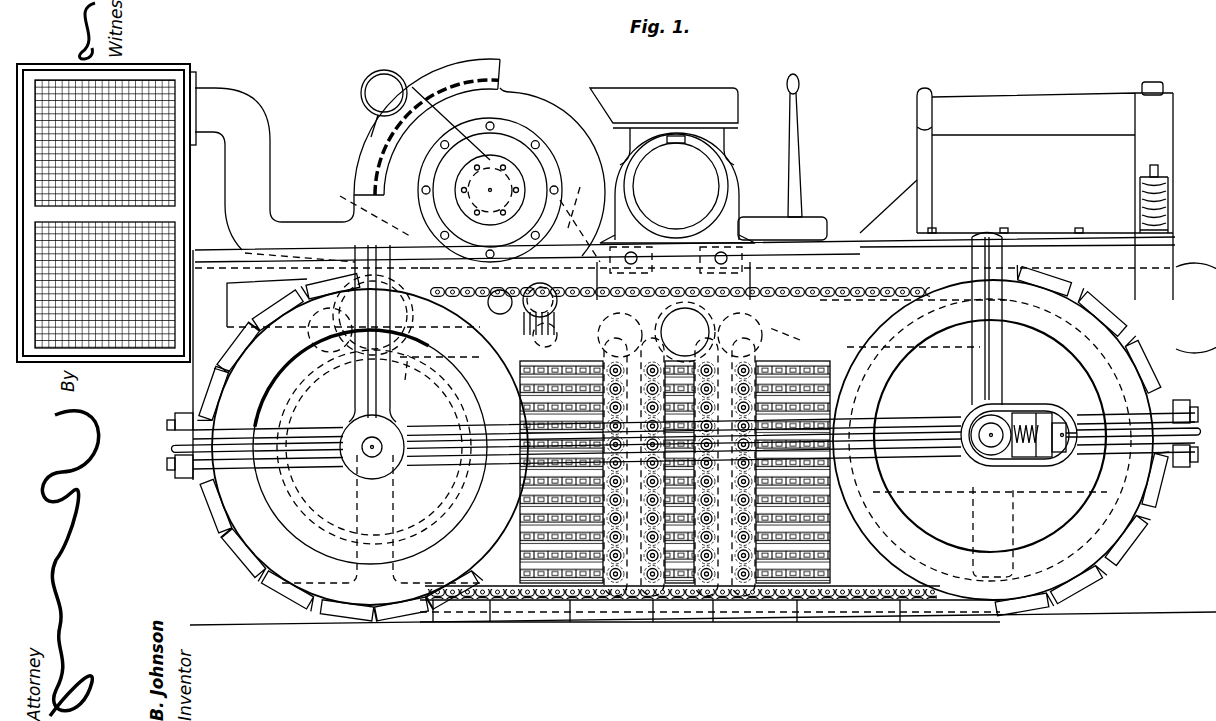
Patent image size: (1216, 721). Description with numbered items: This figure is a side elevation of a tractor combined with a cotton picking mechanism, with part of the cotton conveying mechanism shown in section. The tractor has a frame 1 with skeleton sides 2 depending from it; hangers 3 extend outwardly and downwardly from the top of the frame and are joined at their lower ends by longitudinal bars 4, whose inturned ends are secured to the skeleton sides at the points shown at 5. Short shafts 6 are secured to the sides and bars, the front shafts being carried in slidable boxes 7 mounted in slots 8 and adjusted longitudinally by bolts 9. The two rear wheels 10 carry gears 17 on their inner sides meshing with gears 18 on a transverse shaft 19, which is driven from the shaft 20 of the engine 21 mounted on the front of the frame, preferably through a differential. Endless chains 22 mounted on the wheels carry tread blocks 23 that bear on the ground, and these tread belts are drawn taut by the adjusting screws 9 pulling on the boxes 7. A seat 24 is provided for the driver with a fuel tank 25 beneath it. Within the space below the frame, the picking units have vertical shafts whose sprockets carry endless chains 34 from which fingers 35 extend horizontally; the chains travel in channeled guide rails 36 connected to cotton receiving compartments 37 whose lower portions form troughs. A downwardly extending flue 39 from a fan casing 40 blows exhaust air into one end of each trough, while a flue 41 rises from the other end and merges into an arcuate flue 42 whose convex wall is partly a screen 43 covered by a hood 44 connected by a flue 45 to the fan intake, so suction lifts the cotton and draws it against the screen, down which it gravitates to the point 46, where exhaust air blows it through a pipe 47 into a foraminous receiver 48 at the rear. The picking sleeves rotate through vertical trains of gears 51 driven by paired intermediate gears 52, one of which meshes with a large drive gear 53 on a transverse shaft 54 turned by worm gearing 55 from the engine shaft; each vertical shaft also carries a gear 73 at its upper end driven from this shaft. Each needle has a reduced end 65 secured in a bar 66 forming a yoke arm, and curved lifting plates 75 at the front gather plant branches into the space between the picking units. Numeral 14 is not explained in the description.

The frame 1 is at (814, 242).
The skeleton sides 2 is at (858, 332).
The hangers 3 is at (980, 347).
The longitudinal bars 4 is at (683, 470).
The securing point of bar ends 5 is at (1185, 404).
The short shafts 6 is at (985, 438).
The slidable boxes 7 is at (1005, 445).
The slots 8 is at (1028, 420).
The bolts 9 is at (1031, 446).
The rear wheels 10 is at (968, 527).
The pinion 14 is at (530, 315).
The gears 17 is at (409, 376).
The gears 18 is at (400, 315).
The transverse shaft 19 is at (325, 340).
The engine shaft 20 is at (517, 353).
The engine 21 is at (1022, 105).
The endless chains 22 is at (552, 602).
The tread blocks 23 is at (645, 602).
The seat 24 is at (681, 100).
The fuel tank 25 is at (698, 188).
The endless chains 34 is at (788, 558).
The fingers 35 is at (867, 563).
The channeled guide rails 36 is at (702, 553).
The cotton receiving compartments 37 is at (754, 563).
The flue 39 is at (692, 258).
The fan casing 40 is at (497, 152).
The flue 41 is at (596, 604).
The flue 42 is at (513, 93).
The screen 43 is at (412, 87).
The hood 44 is at (423, 78).
The flue 45 is at (375, 90).
The cotton meeting point 46 is at (358, 208).
The pipe 47 is at (243, 122).
The foraminous receiver 48 is at (163, 110).
The gear 51 is at (634, 600).
The intermediate gears 52 is at (722, 368).
The drive gear 53 is at (737, 280).
The transverse shaft 54 is at (685, 300).
The worm gearing 55 is at (741, 242).
The reduced end 65 is at (674, 470).
The bar 66 is at (838, 503).
The gear 73 is at (534, 318).
The curved lifting plates 75 is at (1132, 582).